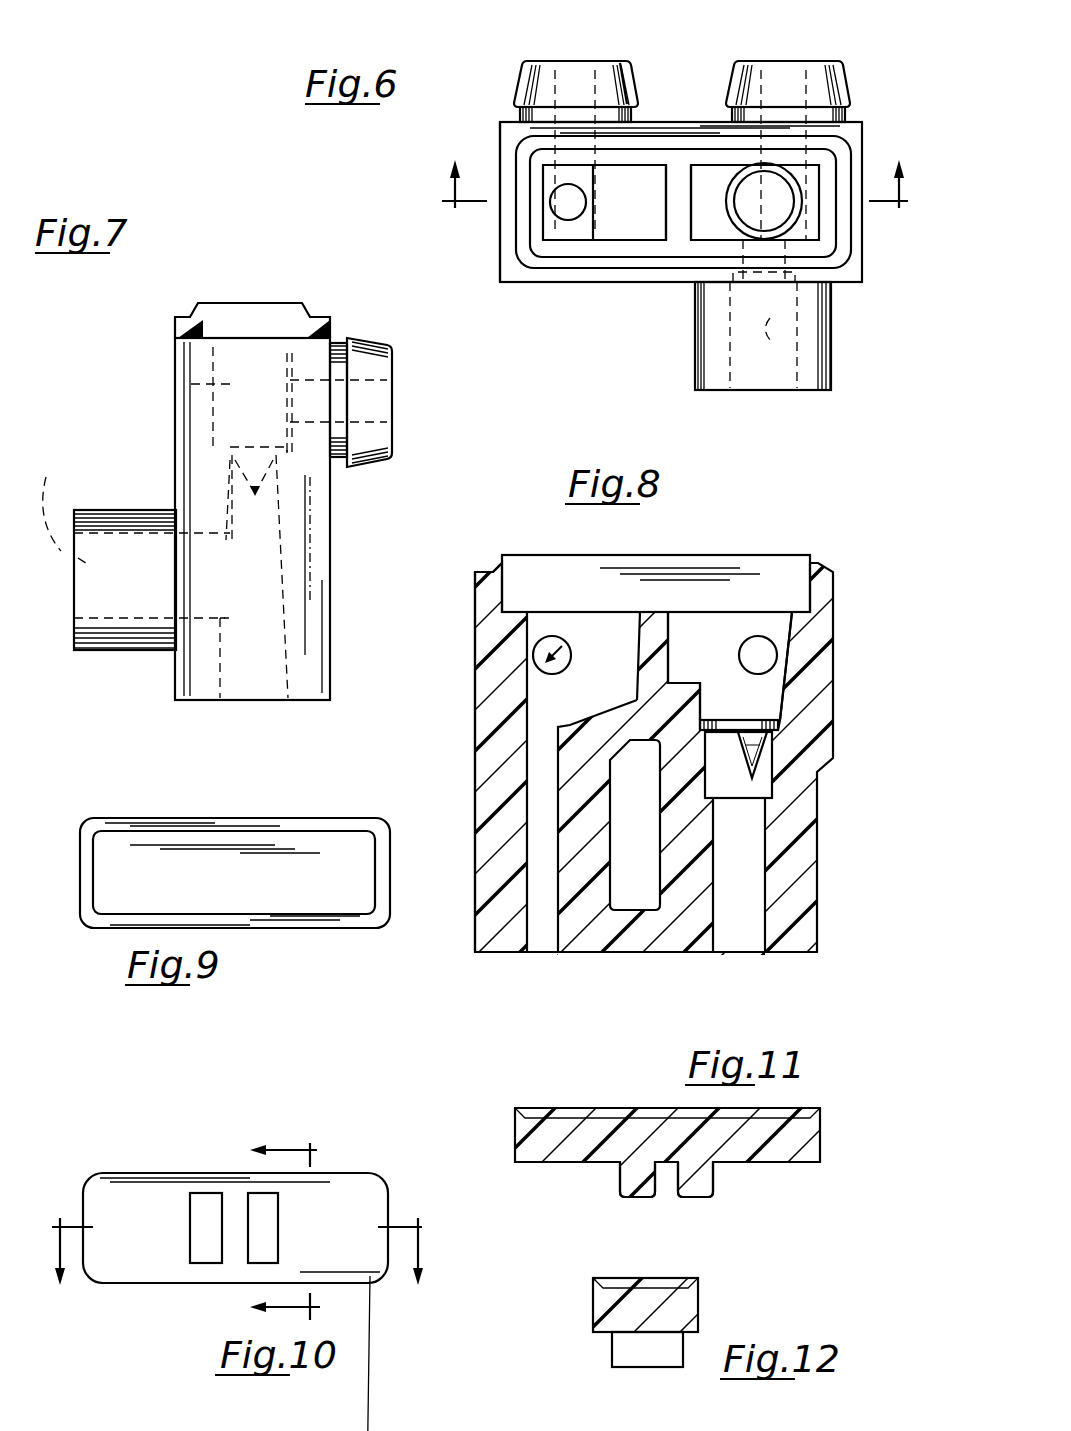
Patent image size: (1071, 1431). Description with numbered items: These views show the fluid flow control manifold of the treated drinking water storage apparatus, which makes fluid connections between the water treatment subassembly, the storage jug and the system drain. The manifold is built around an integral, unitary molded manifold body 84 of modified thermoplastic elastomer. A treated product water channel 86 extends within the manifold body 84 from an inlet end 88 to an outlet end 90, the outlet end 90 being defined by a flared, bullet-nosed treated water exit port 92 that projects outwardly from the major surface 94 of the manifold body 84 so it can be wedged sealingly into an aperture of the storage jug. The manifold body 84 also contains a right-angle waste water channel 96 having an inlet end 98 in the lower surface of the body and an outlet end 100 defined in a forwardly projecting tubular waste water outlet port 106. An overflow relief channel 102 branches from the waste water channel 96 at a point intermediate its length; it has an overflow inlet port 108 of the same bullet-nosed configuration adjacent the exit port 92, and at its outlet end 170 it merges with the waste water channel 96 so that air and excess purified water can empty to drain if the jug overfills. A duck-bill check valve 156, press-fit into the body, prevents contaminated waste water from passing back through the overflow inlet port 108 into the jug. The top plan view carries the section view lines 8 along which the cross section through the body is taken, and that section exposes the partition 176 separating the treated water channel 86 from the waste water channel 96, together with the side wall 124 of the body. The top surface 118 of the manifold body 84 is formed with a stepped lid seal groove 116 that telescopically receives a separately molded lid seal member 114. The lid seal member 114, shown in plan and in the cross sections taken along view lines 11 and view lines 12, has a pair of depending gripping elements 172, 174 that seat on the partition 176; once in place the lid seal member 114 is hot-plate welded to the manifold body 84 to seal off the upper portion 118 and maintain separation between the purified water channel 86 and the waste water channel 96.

In FIG. 6, the manifold body 84 is at (520, 274).
In FIG. 7, the manifold body 84 is at (180, 350).
In FIG. 8, the manifold body 84 is at (815, 718).
In FIG. 6, the treated product water channel 86 is at (566, 212).
In FIG. 8, the treated product water channel 86 is at (542, 788).
In FIG. 8, the inlet end 88 is at (543, 953).
In FIG. 6, the outlet end 90 is at (603, 58).
In FIG. 8, the outlet end 90 is at (538, 648).
In FIG. 6, the treated water exit port 92 is at (627, 92).
In FIG. 8, the treated water exit port 92 is at (537, 663).
In FIG. 6, the major surface 94 is at (666, 122).
In FIG. 6, the waste water channel 96 is at (774, 218).
In FIG. 7, the waste water channel 96 is at (263, 587).
In FIG. 8, the waste water channel 96 is at (743, 875).
In FIG. 7, the inlet end 98 is at (245, 700).
In FIG. 8, the inlet end 98 is at (738, 953).
In FIG. 6, the outlet end 100 is at (795, 312).
In FIG. 7, the outlet end 100 is at (136, 538).
In FIG. 6, the overflow relief channel 102 is at (784, 72).
In FIG. 7, the overflow relief channel 102 is at (188, 377).
In FIG. 8, the overflow relief channel 102 is at (742, 700).
In FIG. 6, the waste water outlet port 106 is at (822, 378).
In FIG. 7, the waste water outlet port 106 is at (112, 640).
In FIG. 6, the overflow inlet port 108 is at (832, 94).
In FIG. 7, the overflow inlet port 108 is at (378, 405).
In FIG. 8, the overflow inlet port 108 is at (772, 648).
In FIG. 9, the lid seal member 114 is at (323, 830).
In FIG. 10, the lid seal member 114 is at (355, 1198).
In FIG. 11, the lid seal member 114 is at (805, 1150).
In FIG. 12, the lid seal member 114 is at (688, 1298).
In FIG. 6, the lid seal groove 116 is at (652, 262).
In FIG. 7, the lid seal groove 116 is at (205, 330).
In FIG. 8, the lid seal groove 116 is at (525, 610).
In FIG. 6, the top surface 118 is at (584, 276).
In FIG. 7, the top surface 118 is at (178, 317).
In FIG. 8, the top surface 118 is at (478, 572).
In FIG. 6, the side wall 124 is at (485, 223).
In FIG. 8, the side wall 124 is at (475, 729).
In FIG. 7, the check valve 156 is at (200, 445).
In FIG. 8, the check valve 156 is at (740, 747).
In FIG. 7, the outlet end 170 is at (262, 527).
In FIG. 8, the outlet end 170 is at (767, 715).
In FIG. 10, the gripping element 172 is at (205, 1200).
In FIG. 11, the gripping element 172 is at (628, 1197).
In FIG. 10, the gripping element 174 is at (262, 1205).
In FIG. 11, the gripping element 174 is at (712, 1185).
In FIG. 12, the gripping element 174 is at (628, 1342).
In FIG. 6, the partition 176 is at (677, 238).
In FIG. 8, the partition 176 is at (653, 625).
In FIG. 6, the view lines 8— 8 is at (675, 172).
In FIG. 10, the view lines 11— 11 is at (238, 1267).
In FIG. 10, the view lines 12— 12 is at (269, 1229).